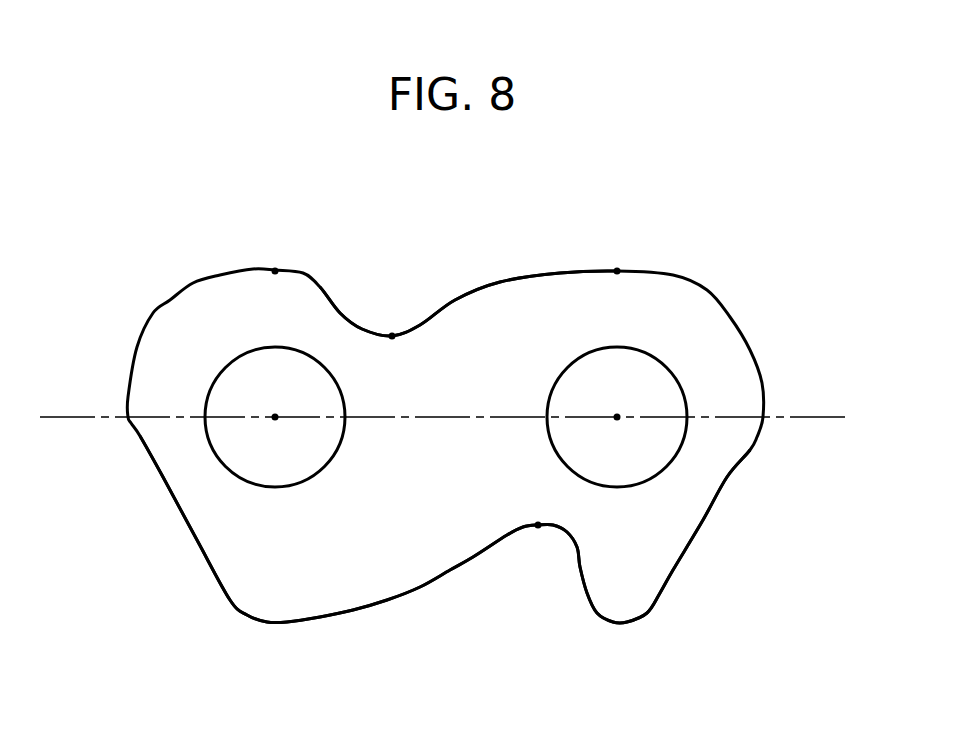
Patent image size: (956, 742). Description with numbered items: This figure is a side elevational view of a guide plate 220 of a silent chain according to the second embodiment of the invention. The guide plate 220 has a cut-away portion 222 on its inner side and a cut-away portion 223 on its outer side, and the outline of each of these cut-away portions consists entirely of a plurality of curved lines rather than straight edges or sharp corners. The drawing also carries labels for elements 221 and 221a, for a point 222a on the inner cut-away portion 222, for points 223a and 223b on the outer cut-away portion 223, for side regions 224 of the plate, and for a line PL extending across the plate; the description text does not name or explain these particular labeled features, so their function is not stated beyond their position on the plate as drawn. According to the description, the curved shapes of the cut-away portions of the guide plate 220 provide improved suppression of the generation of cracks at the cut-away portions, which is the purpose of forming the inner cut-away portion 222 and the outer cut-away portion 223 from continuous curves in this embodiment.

The guide plate 220 is at (625, 173).
The hole 221 is at (278, 481).
The hole center 221a is at (275, 417).
The cut-away portion 222 is at (482, 592).
The lower edge peak 222a is at (538, 527).
The cut-away portion 223 is at (455, 265).
The upper edge valley 223a is at (392, 336).
The upper edge apex 223b is at (275, 271).
The side edge 224 is at (163, 477).
The center line PL is at (790, 415).